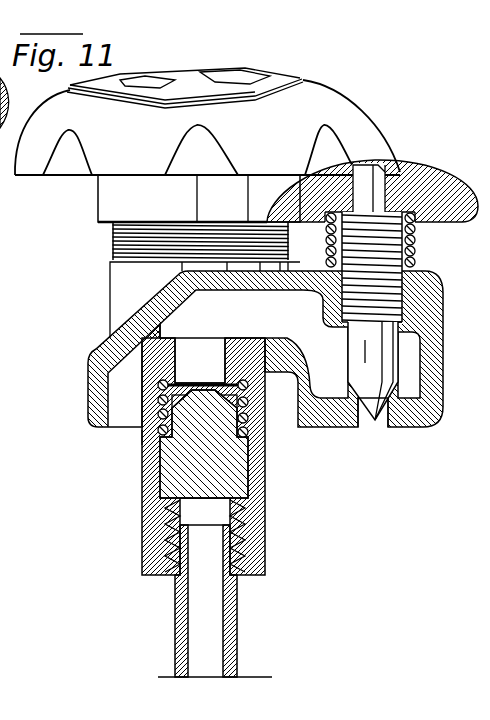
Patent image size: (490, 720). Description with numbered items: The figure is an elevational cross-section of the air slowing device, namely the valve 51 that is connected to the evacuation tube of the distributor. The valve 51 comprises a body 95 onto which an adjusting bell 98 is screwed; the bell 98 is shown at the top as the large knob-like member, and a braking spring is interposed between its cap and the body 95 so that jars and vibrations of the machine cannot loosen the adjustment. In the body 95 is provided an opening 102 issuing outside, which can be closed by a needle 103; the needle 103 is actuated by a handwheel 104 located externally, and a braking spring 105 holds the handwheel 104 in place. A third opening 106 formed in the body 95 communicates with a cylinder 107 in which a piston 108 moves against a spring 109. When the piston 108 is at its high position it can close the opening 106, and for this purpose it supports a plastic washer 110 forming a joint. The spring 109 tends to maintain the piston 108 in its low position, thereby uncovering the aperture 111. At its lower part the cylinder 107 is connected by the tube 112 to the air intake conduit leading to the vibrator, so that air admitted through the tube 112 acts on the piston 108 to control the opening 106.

The adjusting bell 98 is at (322, 97).
The handwheel 104 is at (430, 183).
The braking spring 105 is at (420, 249).
The valve 51 is at (167, 303).
The third opening 106 is at (196, 345).
The body 95 is at (103, 360).
The aperture 111 is at (144, 403).
The plastic washer 110 is at (247, 386).
The spring 109 is at (157, 438).
The piston 108 is at (237, 472).
The cylinder 107 is at (148, 478).
The tube 112 is at (230, 634).
The opening 102 is at (378, 420).
The needle 103 is at (396, 367).